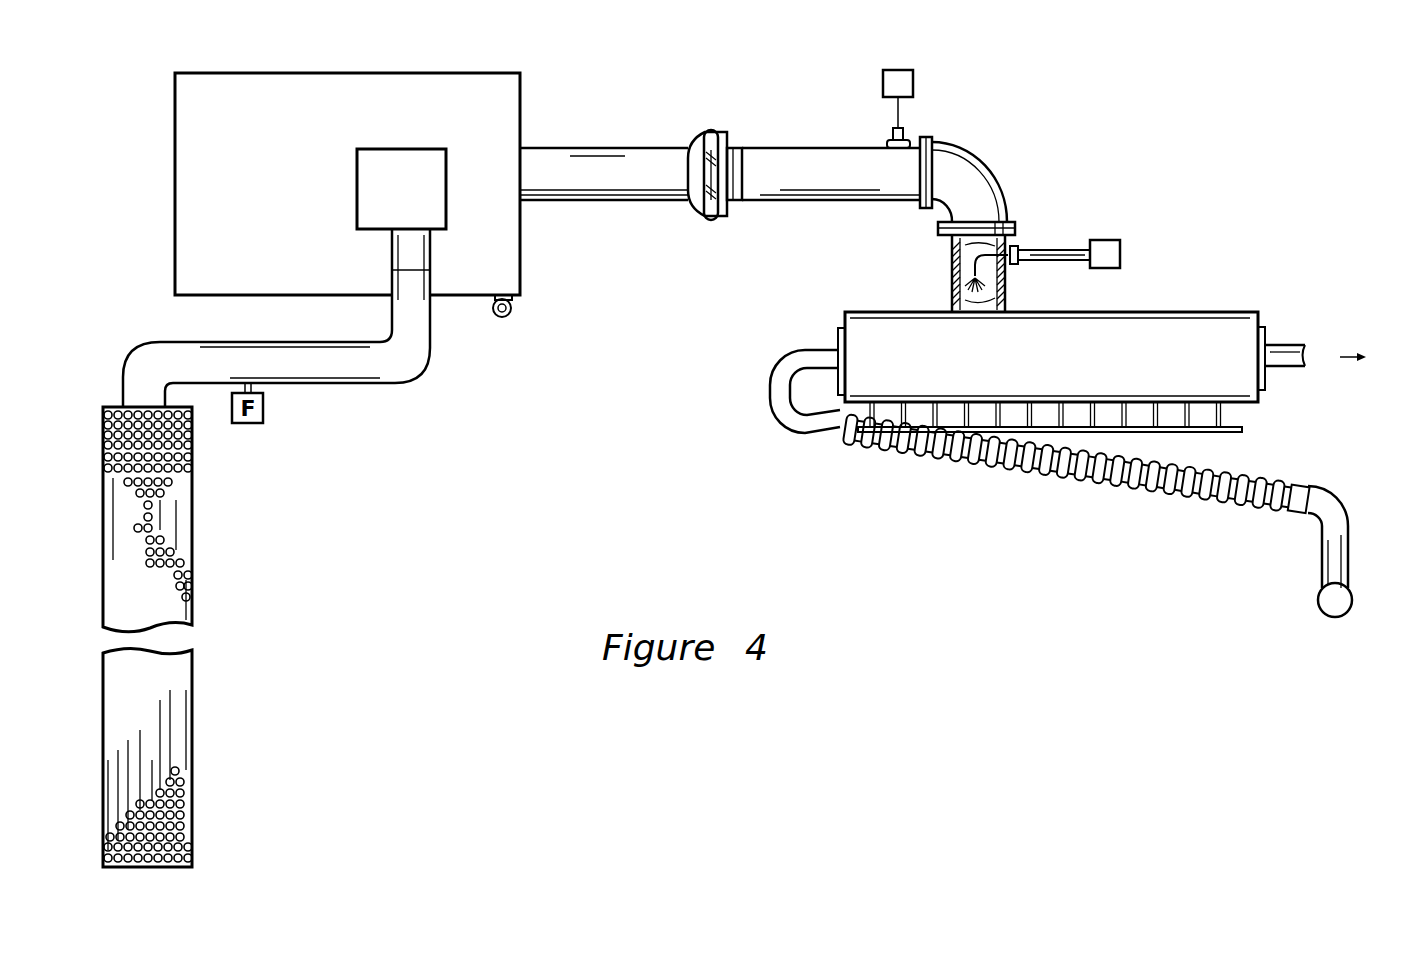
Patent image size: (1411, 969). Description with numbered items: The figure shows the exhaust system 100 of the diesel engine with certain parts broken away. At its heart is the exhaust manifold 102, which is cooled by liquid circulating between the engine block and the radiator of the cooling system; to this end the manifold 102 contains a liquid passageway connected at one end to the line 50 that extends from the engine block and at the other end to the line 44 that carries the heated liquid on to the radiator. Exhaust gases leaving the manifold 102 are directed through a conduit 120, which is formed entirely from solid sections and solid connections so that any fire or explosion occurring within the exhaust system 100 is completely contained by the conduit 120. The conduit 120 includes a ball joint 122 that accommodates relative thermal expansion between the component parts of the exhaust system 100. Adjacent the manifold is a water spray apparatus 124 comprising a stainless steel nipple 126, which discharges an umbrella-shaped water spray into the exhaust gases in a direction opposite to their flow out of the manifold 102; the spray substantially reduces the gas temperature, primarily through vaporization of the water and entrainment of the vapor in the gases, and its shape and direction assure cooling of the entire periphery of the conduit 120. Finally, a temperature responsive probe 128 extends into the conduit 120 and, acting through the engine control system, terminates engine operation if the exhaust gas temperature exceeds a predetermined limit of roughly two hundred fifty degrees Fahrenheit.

The exhaust system 100 is at (650, 143).
The conduit 120 is at (799, 162).
The ball joint 122 is at (705, 212).
The water spray apparatus 124 is at (950, 256).
The stainless steel nipple 126 is at (998, 270).
The temperature responsive probe 128 is at (893, 133).
The exhaust manifold 102 is at (870, 322).
The line 44 is at (1287, 345).
The line 50 is at (1012, 470).